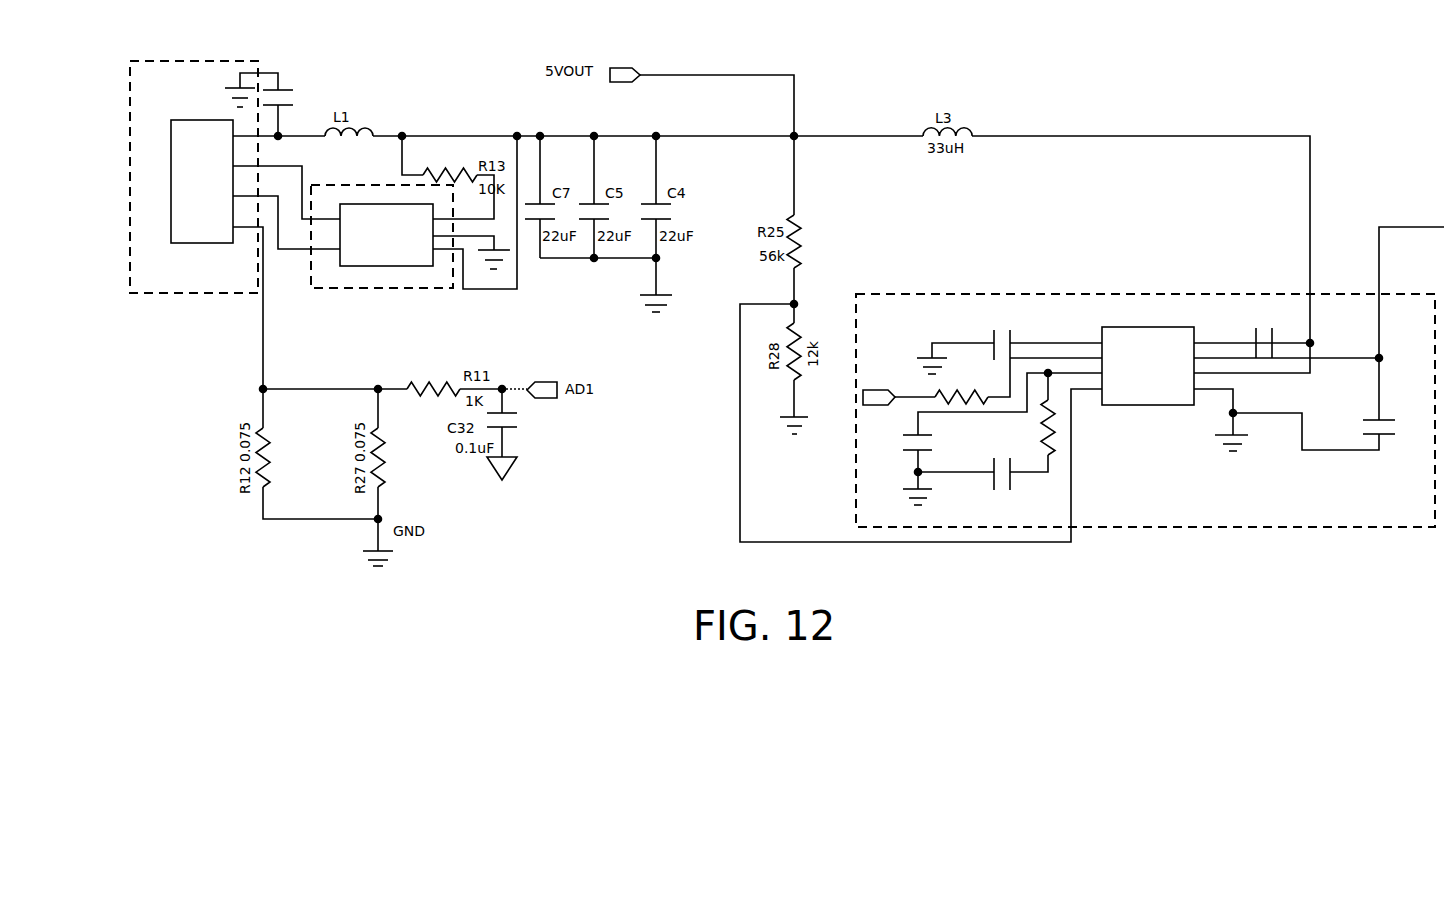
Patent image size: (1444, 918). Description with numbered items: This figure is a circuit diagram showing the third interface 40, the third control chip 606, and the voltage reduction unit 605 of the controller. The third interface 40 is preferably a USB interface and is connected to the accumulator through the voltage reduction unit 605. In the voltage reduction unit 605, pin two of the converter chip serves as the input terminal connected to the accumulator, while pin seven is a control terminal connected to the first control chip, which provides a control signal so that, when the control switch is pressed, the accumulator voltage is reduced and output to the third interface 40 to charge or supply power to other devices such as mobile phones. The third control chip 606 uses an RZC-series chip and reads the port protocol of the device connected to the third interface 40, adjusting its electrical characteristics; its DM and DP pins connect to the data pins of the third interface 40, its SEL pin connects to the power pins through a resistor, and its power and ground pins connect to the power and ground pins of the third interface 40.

The third interface 40 is at (128, 145).
The third control chip 606 is at (393, 293).
The voltage reduction unit 605 is at (1118, 293).